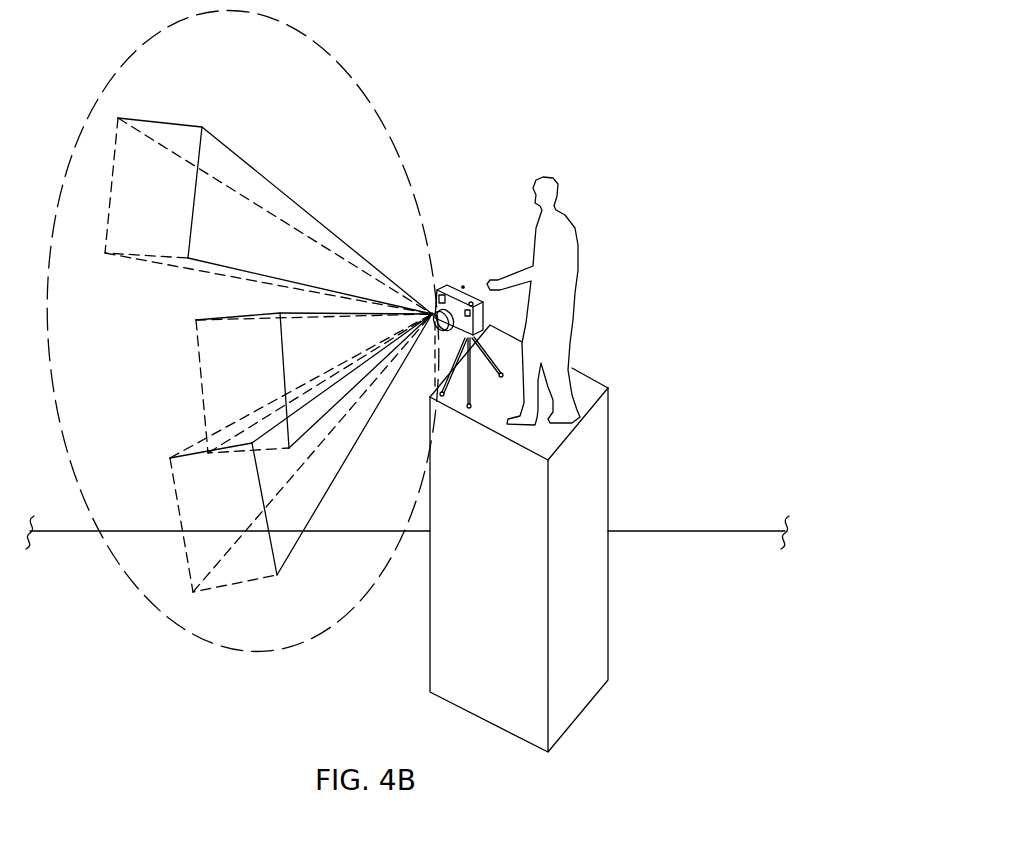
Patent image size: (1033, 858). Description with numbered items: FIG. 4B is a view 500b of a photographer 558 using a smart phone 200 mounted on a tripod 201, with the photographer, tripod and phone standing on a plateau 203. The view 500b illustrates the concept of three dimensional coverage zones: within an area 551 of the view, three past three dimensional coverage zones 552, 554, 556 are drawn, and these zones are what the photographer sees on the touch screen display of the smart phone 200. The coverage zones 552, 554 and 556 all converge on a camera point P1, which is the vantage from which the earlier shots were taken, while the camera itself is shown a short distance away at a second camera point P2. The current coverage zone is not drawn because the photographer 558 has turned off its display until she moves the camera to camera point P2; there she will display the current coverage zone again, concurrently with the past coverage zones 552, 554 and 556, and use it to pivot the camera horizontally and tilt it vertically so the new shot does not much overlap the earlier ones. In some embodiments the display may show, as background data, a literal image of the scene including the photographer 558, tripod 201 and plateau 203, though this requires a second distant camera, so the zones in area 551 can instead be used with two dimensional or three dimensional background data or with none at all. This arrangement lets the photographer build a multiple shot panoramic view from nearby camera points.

The view 500b is at (572, 97).
The area 551 is at (135, 582).
The three dimensional coverage zone 552 is at (240, 157).
The three dimensional coverage zone 554 is at (201, 375).
The three dimensional coverage zone 556 is at (178, 512).
The photographer 558 is at (577, 236).
The smart phone 200 is at (474, 300).
The tripod 201 is at (470, 408).
The plateau 203 is at (585, 653).
The camera point P1 is at (430, 308).
The camera point P2 is at (463, 286).